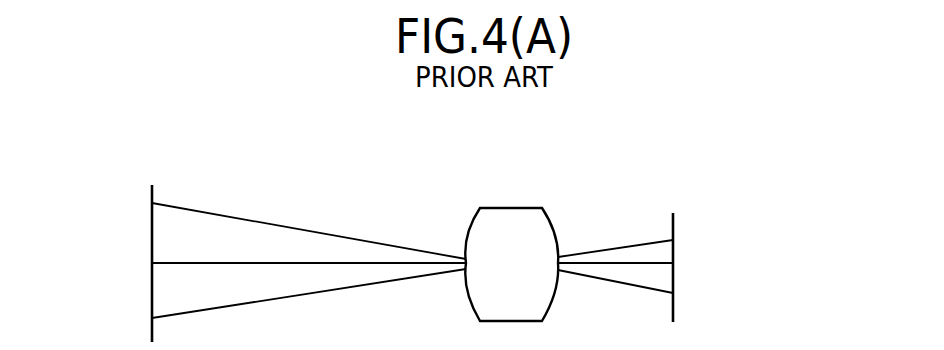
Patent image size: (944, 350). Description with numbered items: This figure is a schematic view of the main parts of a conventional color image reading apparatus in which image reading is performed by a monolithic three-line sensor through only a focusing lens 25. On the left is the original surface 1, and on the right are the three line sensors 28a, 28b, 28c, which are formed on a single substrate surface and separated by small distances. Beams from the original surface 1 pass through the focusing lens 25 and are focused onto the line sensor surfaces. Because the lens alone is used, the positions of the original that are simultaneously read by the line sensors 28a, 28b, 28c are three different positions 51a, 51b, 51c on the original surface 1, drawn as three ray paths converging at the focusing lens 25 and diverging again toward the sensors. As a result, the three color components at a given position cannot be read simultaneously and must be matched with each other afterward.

The original surface 1 is at (152, 197).
The focusing lens 25 is at (521, 218).
The position on original 51a is at (152, 318).
The position on original 51b is at (152, 262).
The position on original 51c is at (152, 202).
The line sensor 28a is at (673, 240).
The line sensor 28b is at (673, 263).
The line sensor 28c is at (673, 293).